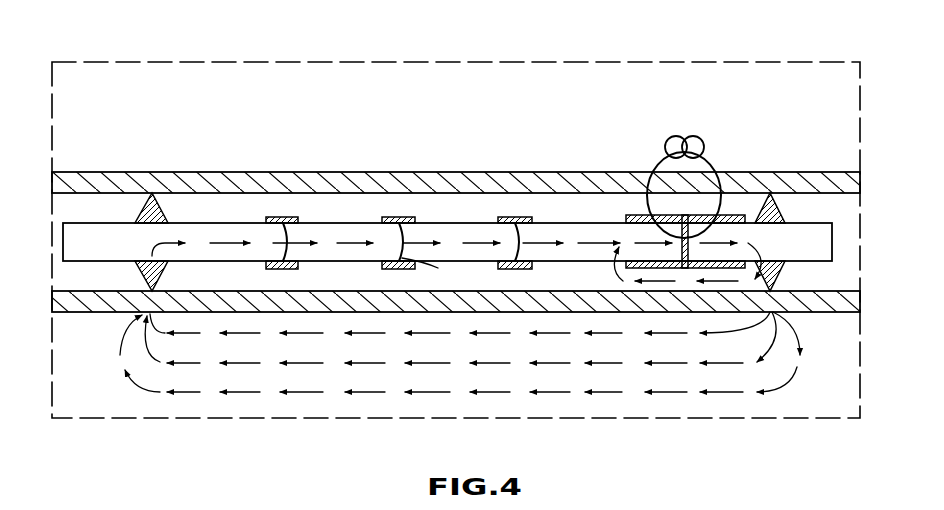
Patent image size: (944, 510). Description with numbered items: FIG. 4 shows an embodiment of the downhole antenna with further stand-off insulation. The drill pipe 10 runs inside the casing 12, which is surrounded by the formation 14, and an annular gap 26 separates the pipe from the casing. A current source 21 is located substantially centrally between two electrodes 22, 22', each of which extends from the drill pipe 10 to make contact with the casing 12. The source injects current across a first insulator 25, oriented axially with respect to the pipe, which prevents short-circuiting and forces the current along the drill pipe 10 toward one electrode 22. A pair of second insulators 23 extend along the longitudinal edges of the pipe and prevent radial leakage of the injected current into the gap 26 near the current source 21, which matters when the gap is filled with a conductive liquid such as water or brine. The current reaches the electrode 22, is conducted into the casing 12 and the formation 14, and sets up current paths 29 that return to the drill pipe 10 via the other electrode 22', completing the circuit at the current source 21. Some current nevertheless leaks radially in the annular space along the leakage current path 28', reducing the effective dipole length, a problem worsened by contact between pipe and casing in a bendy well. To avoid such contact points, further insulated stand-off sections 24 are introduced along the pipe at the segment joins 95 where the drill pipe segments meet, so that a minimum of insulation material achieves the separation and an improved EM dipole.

The drill pipe 10 is at (247, 232).
The casing 12 is at (827, 172).
The formation 14 is at (87, 80).
The current source 21 is at (668, 138).
The electrode 22 is at (770, 211).
The electrode 22' is at (151, 204).
The second insulators 23 is at (626, 217).
The insulated stand-off sections 24 is at (387, 218).
The first insulator 25 is at (687, 215).
The gap 26 is at (80, 273).
The leakage current path 28' is at (659, 266).
The current paths 29 is at (677, 395).
The segment joins 95 is at (284, 252).